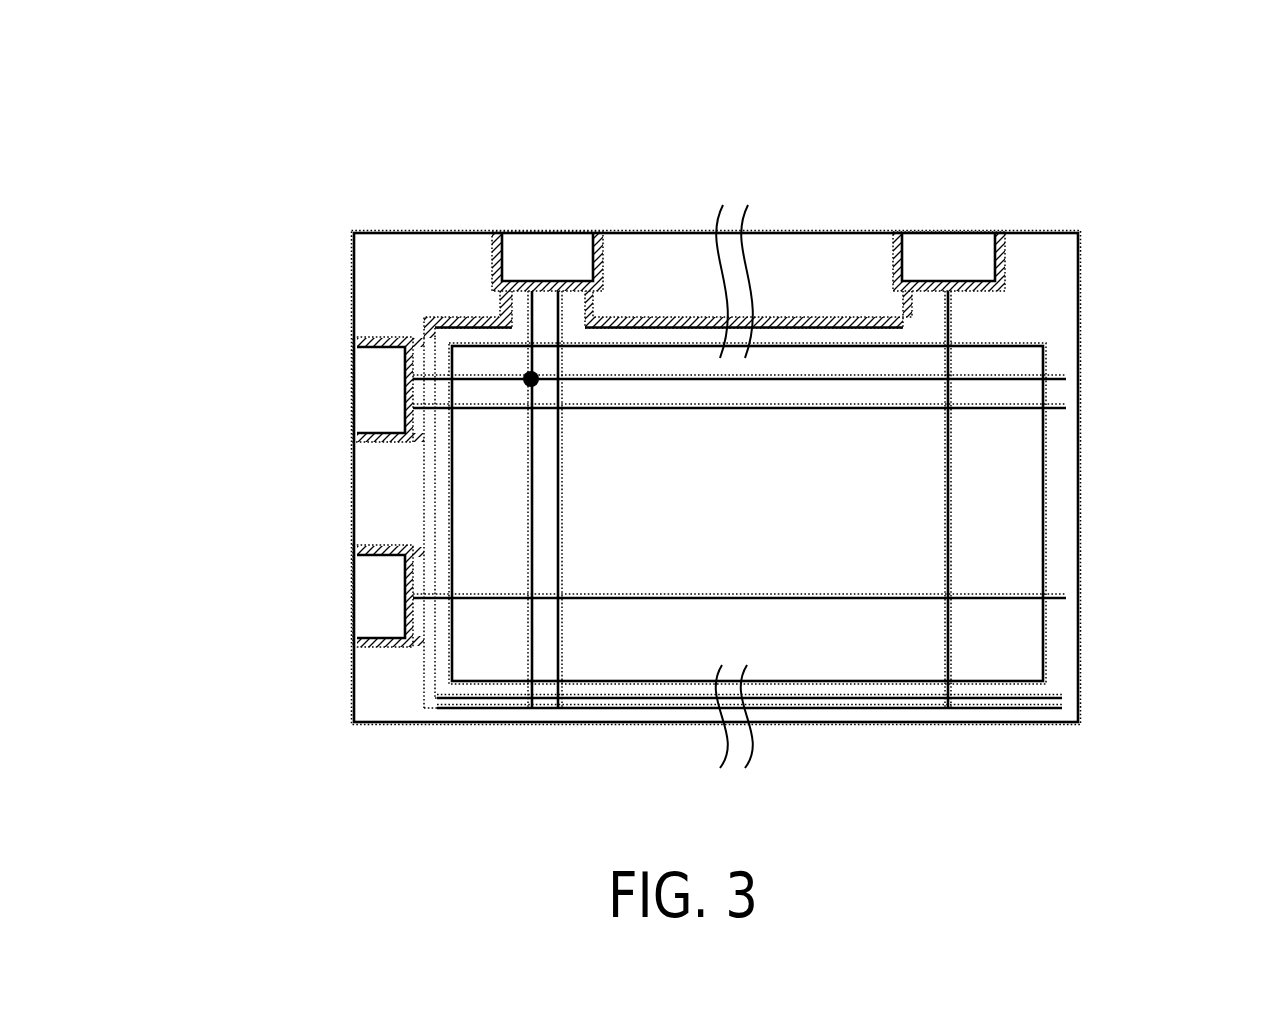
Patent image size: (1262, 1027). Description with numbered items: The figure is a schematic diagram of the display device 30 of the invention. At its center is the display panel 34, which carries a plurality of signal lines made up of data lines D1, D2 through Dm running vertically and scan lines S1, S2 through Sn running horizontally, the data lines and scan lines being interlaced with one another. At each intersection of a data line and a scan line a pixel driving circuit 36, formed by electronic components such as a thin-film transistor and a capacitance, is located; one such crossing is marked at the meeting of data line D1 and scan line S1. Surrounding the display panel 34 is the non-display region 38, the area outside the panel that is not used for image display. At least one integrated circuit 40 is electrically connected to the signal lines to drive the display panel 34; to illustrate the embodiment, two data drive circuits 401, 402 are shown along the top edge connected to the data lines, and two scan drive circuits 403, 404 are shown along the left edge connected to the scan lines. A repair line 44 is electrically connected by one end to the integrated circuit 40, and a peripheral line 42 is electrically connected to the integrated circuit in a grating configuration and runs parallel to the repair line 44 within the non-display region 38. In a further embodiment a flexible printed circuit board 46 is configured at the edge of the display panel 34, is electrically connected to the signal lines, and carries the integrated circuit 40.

The display device 30 is at (1242, 85).
The display panel 34 is at (1003, 535).
The pixel driving circuit 36 is at (487, 380).
The non-display region 38 is at (382, 267).
The integrated circuit 40 is at (741, 196).
The data drive circuit 401 is at (557, 260).
The data drive circuit 402 is at (958, 258).
The peripheral line 42 is at (623, 462).
The scan drive circuit 403 is at (375, 378).
The scan drive circuit 404 is at (375, 583).
The repair line 44 is at (462, 290).
The flexible printed circuit board 46 is at (996, 240).
The scan line S1 is at (1065, 378).
The scan line S2 is at (1058, 406).
The scan line Sn is at (1065, 596).
The data line D1 is at (527, 708).
The data line D2 is at (567, 708).
The data line Dm is at (947, 707).